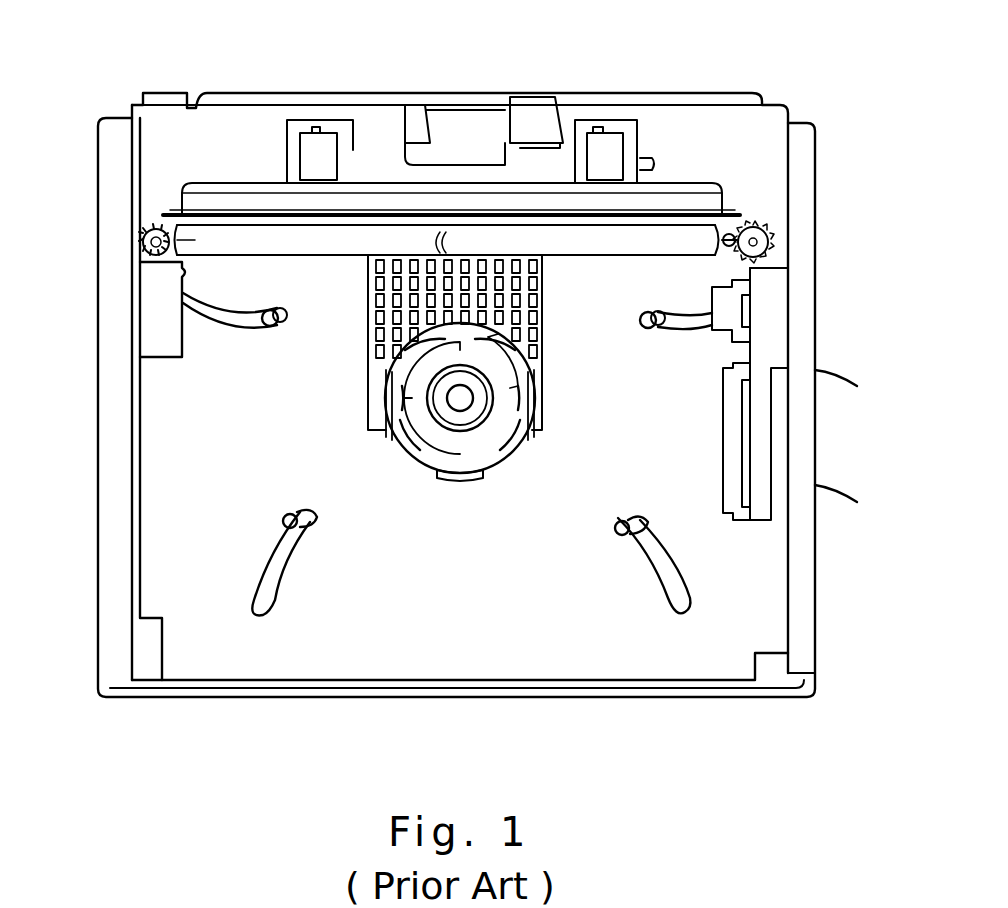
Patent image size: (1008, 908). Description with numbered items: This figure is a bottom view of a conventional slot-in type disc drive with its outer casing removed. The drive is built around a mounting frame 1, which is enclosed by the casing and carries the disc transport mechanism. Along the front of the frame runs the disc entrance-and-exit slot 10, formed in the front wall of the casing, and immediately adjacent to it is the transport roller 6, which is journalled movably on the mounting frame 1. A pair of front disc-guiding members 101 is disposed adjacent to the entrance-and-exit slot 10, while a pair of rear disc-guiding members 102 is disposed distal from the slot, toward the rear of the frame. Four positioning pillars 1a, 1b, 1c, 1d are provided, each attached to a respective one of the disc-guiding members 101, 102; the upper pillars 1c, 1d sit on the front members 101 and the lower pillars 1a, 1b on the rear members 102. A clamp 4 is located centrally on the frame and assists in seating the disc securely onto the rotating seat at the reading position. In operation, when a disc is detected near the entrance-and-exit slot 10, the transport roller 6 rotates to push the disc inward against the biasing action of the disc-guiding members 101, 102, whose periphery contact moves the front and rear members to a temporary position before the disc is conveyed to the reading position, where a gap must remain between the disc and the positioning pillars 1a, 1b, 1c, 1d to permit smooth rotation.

The mounting frame 1 is at (838, 52).
The positioning pillar 1a is at (288, 528).
The positioning pillar 1b is at (621, 535).
The positioning pillar 1c is at (648, 312).
The positioning pillar 1d is at (271, 310).
The clamp 4 is at (467, 355).
The transport roller 6 is at (143, 233).
The disc entrance-and-exit slot 10 is at (327, 92).
The front disc-guiding member 101 is at (278, 310).
The rear disc-guiding member 102 is at (303, 526).